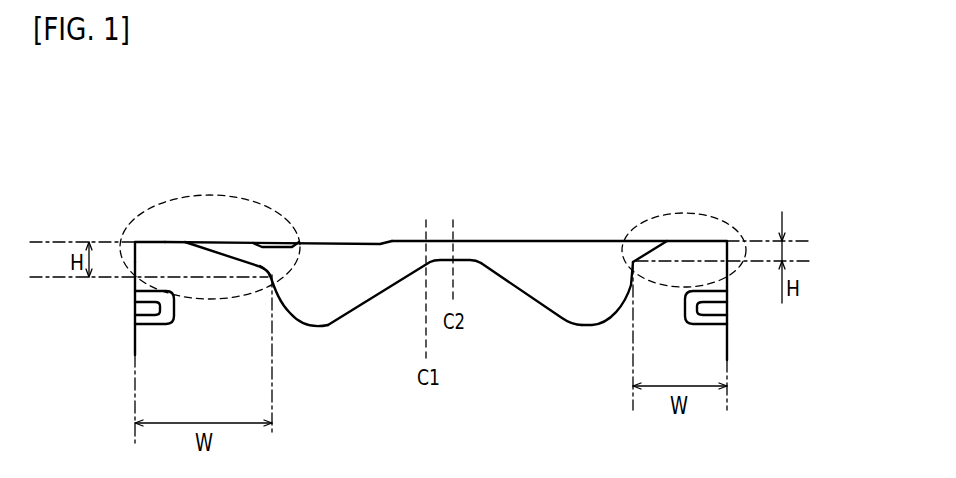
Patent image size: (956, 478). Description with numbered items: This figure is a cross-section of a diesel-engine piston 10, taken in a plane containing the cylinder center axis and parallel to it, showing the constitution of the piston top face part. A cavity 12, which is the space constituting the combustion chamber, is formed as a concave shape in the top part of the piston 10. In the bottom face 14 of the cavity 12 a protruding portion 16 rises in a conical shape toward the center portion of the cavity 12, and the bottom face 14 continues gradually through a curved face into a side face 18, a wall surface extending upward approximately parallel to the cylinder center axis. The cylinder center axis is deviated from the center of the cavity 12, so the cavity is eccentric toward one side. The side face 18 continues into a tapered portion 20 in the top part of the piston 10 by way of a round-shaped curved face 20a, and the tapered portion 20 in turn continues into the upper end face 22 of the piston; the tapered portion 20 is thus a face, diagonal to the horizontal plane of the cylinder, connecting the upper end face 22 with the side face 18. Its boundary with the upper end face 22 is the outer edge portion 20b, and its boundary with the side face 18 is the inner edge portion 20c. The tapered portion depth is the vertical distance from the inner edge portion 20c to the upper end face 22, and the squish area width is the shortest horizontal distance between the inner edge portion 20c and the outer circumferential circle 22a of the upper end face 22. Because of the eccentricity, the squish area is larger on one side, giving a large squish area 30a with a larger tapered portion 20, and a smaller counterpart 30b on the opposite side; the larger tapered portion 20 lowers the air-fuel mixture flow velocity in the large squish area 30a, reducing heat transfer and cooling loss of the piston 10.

The piston 10 is at (737, 158).
The cavity 12 is at (435, 250).
The bottom face 14 is at (588, 323).
The protruding portion 16 is at (485, 267).
The side face 18 is at (636, 271).
The tapered portion 20 is at (232, 243).
The curved face 20a is at (268, 276).
The outer edge portion 20b is at (183, 242).
The inner edge portion 20c is at (267, 277).
The upper end face 22 is at (160, 242).
The outer circumferential circle 22a is at (135, 242).
The large squish area 30a is at (152, 207).
The right joint region 30b is at (717, 221).